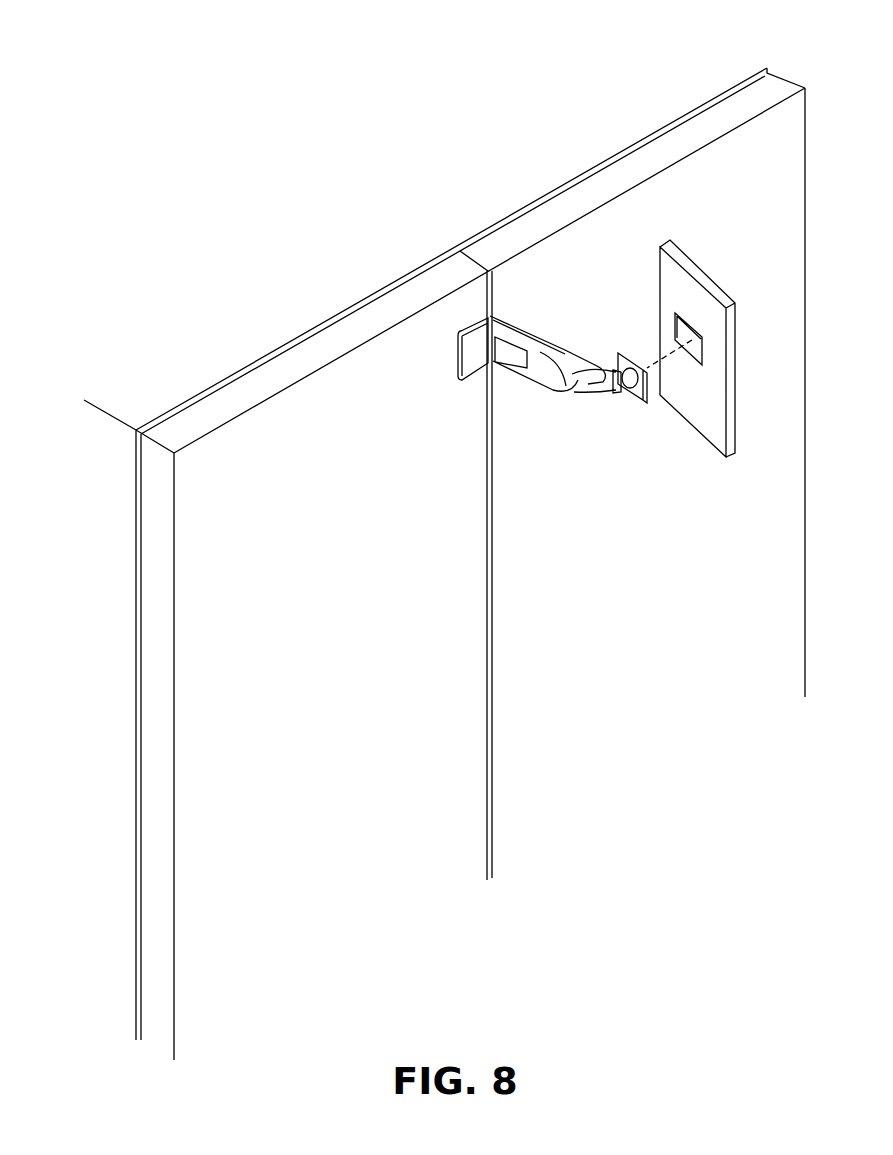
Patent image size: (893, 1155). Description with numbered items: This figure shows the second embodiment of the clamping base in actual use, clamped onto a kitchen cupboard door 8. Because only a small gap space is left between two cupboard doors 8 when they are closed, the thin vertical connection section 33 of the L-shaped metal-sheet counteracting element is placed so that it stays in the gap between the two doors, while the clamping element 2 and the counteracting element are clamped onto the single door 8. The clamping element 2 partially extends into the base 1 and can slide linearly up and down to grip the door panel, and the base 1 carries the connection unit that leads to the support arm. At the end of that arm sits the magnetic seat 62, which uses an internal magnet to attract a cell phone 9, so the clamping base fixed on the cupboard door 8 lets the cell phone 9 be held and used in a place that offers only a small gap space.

The base 1 is at (537, 337).
The clamping element 2 is at (461, 222).
The connection section 33 is at (497, 315).
The magnetic seat 62 is at (645, 400).
The cupboard door 8 is at (333, 437).
The cell phone 9 is at (713, 422).